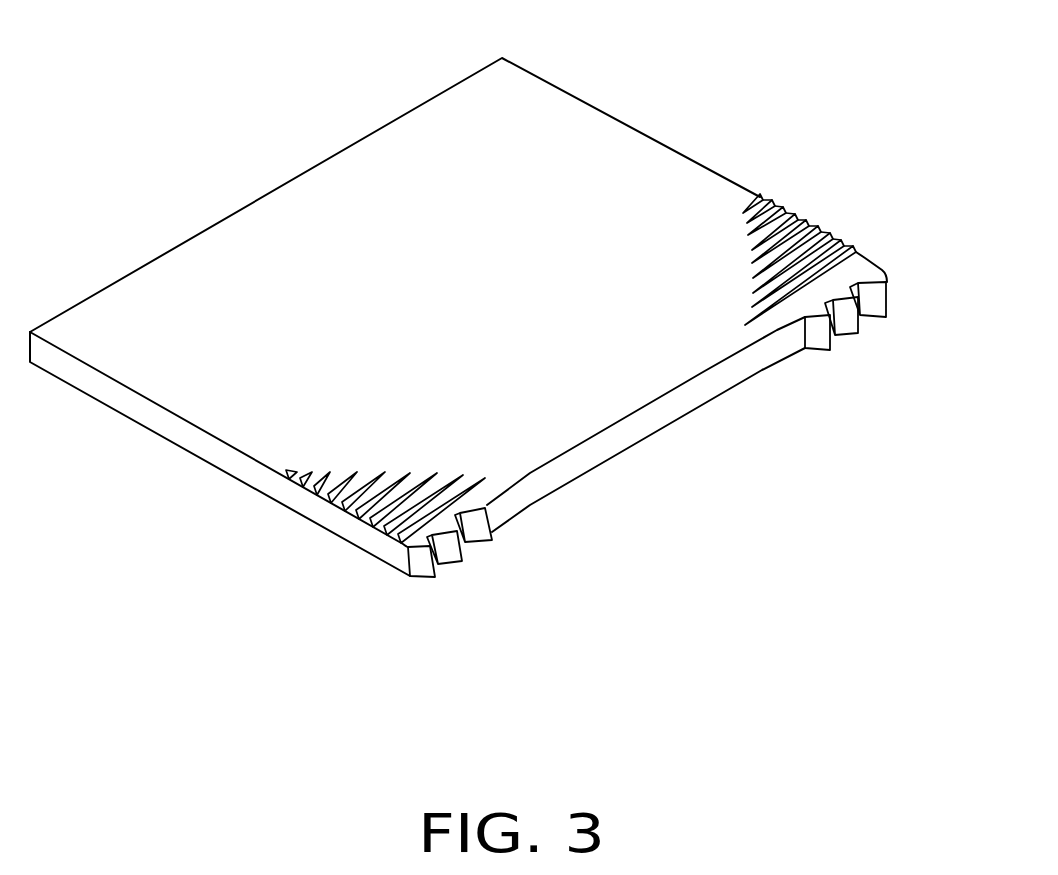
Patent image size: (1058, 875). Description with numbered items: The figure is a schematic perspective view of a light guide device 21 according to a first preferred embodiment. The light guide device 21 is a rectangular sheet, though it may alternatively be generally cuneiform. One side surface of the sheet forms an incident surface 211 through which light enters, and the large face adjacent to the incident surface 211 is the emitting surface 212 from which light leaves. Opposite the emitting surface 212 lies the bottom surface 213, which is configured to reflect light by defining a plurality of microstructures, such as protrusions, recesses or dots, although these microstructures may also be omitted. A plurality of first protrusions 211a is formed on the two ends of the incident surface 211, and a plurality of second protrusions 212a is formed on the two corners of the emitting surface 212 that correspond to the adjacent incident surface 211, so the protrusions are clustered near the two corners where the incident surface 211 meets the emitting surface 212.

The light guide device 21 is at (457, 357).
The incident surface 211 is at (595, 486).
The first protrusions 211a is at (370, 589).
The emitting surface 212 is at (556, 155).
The second protrusions 212a is at (320, 490).
The bottom surface 213 is at (172, 445).